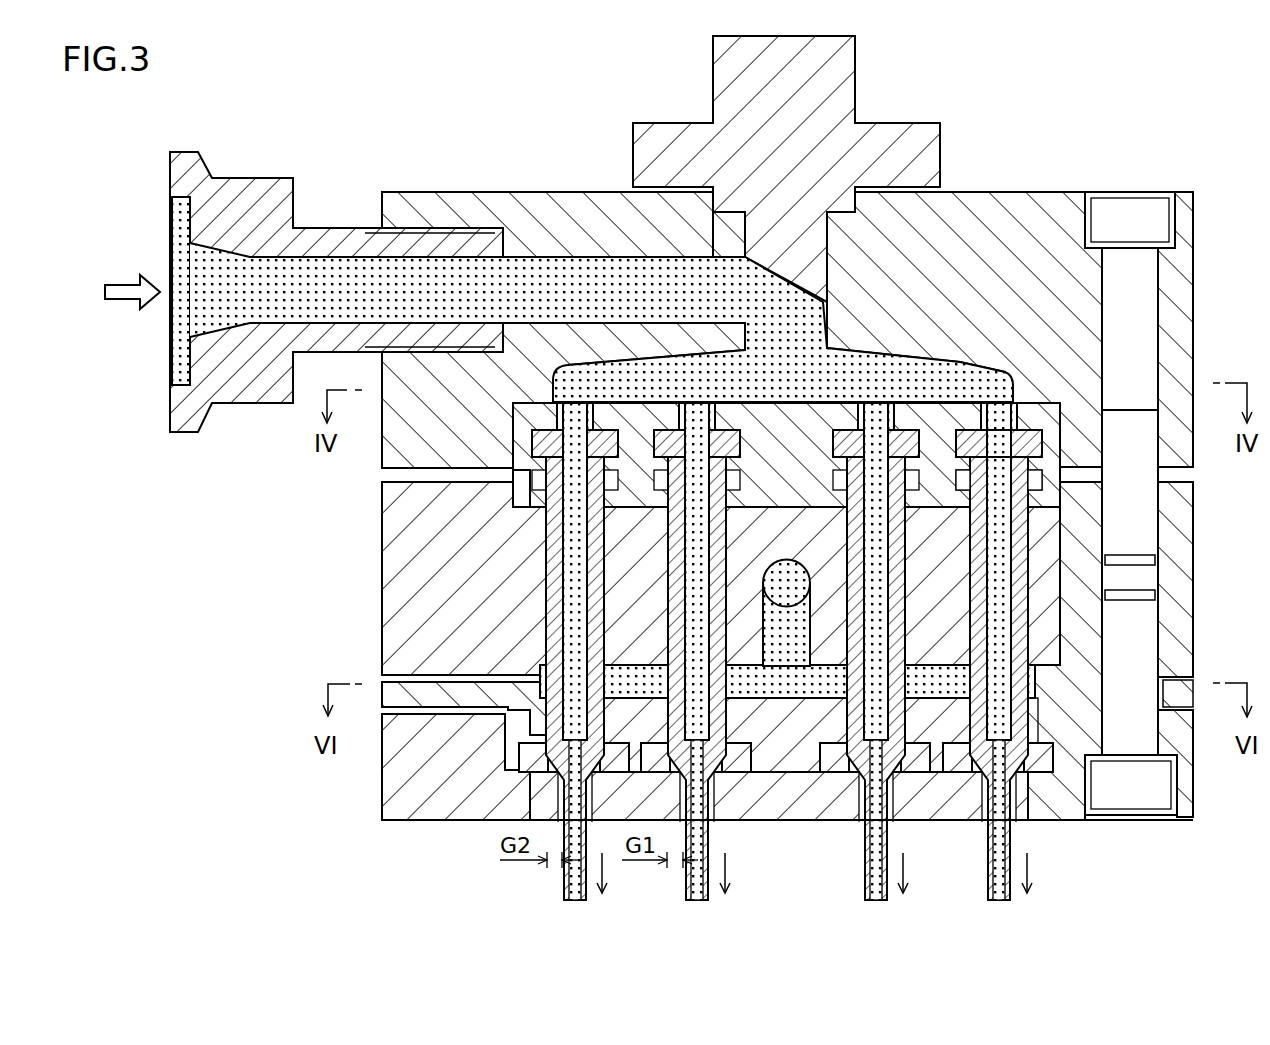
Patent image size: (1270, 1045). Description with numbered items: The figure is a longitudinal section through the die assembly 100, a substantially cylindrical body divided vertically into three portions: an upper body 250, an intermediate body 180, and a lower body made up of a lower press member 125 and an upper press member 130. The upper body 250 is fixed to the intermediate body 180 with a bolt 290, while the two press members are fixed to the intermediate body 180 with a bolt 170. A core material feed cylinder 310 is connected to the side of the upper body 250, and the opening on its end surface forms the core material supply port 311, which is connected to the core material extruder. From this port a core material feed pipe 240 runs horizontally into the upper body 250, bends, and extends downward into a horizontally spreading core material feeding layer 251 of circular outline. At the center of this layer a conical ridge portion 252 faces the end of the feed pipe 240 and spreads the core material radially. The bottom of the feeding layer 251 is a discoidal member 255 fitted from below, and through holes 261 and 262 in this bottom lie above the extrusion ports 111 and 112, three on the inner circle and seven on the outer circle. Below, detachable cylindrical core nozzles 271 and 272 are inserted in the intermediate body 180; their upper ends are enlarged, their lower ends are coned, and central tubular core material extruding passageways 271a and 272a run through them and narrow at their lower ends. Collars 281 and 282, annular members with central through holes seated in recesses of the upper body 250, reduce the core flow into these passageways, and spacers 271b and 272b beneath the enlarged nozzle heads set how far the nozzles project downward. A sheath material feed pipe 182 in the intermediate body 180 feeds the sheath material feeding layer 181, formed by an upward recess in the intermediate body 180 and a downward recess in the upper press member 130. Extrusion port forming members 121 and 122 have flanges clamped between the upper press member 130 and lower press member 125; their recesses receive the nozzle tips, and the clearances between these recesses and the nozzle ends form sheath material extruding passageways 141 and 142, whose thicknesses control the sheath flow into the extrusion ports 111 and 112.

The die assembly 100 is at (1193, 847).
The extrusion port 111 is at (883, 795).
The extrusion port 112 is at (1010, 822).
The extrusion port forming member 121 is at (847, 790).
The extrusion port forming member 122 is at (1093, 817).
The lower press member 125 is at (410, 783).
The upper press member 130 is at (417, 695).
The sheath material extruding passageway 141 is at (690, 735).
The sheath material extruding passageway 142 is at (545, 730).
The bolt 170 is at (1150, 783).
The intermediate body 180 is at (410, 625).
The sheath material feeding layer 181 is at (962, 658).
The sheath material feed pipe 182 is at (803, 578).
The core material feed pipe 240 is at (450, 295).
The upper body 250 is at (420, 468).
The core material feeding layer 251 is at (947, 375).
The conical ridge portion 252 is at (830, 352).
The discoidal member 255 is at (530, 483).
The through hole 261 is at (697, 403).
The through hole 262 is at (575, 403).
The core nozzle 271 is at (910, 500).
The core material extruding passageway 271a is at (822, 655).
The spacer 271b is at (663, 507).
The core nozzle 272 is at (1020, 580).
The core material extruding passageway 272a is at (953, 775).
The spacer 272b is at (556, 540).
The collar 281 is at (1005, 420).
The collar 282 is at (1030, 452).
The bolt 290 is at (1140, 275).
The core material feed cylinder 310 is at (240, 385).
The core material supply port 311 is at (172, 350).